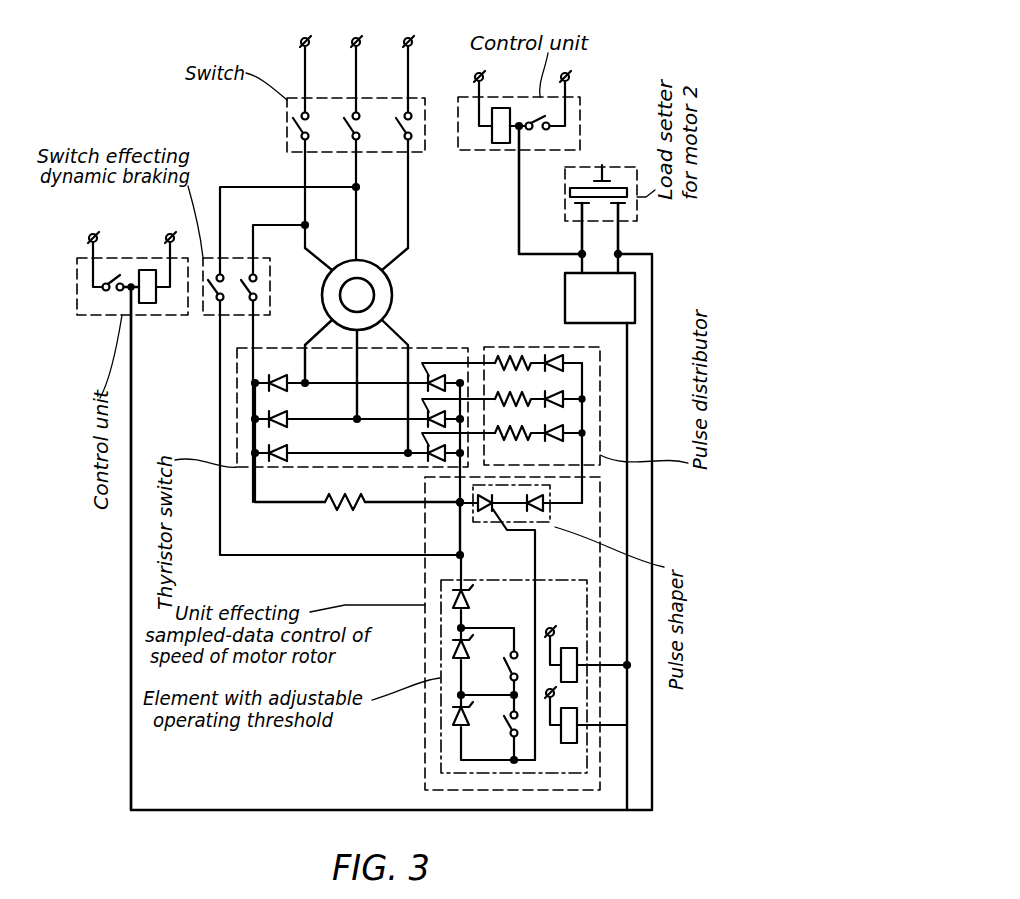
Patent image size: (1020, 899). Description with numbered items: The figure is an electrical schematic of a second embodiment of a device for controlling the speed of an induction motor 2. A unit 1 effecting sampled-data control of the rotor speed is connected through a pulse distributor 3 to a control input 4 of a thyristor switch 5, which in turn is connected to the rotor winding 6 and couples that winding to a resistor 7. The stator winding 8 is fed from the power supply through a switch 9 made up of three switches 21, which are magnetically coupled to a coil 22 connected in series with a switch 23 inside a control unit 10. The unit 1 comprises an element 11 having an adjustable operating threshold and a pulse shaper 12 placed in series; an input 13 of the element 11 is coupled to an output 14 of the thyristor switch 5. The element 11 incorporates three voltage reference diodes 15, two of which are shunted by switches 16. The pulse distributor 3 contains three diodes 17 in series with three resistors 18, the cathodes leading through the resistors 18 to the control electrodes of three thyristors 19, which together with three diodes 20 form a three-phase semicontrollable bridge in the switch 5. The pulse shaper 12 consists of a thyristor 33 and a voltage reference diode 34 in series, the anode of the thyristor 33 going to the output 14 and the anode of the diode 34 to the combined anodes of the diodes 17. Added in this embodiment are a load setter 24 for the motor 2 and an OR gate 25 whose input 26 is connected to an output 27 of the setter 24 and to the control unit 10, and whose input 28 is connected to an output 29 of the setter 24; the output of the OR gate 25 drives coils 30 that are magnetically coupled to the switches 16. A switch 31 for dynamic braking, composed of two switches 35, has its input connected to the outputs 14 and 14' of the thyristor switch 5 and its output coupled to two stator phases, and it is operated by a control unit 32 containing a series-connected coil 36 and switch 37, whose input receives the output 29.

The unit effecting sampled-data control 1 is at (425, 588).
The motor 2 is at (404, 267).
The pulse distributor 3 is at (600, 372).
The control input 4 is at (480, 356).
The thyristor switch 5 is at (237, 405).
The rotor winding 6 is at (374, 292).
The resistor 7 is at (345, 510).
The stator winding 8 is at (392, 310).
The switch 9 is at (284, 143).
The control unit 10 is at (515, 74).
The element having an adjustable operating threshold 11 is at (441, 630).
The pulse shaper 12 is at (545, 523).
The input 13 is at (461, 582).
The output 14 is at (414, 527).
The output 14' is at (278, 521).
The voltage reference diodes 15 is at (467, 654).
The switches 16 is at (504, 672).
The diodes 17 is at (562, 357).
The resistors 18 is at (511, 354).
The thyristors 19 is at (438, 470).
The diodes 20 is at (280, 470).
The switches 21 is at (361, 125).
The coil 22 is at (502, 145).
The switch 23 is at (538, 132).
The load setter 24 is at (602, 167).
The OR gate 25 is at (600, 298).
The input 26 is at (578, 270).
The output 27 is at (577, 233).
The input 28 is at (617, 268).
The output 29 is at (637, 222).
The coils 30 is at (575, 738).
The switch 31 is at (223, 254).
The control unit 32 is at (107, 316).
The thyristor 33 is at (484, 522).
The voltage reference diode 34 is at (545, 510).
The switches 35 is at (258, 283).
The coil 36 is at (147, 303).
The switch 37 is at (112, 275).